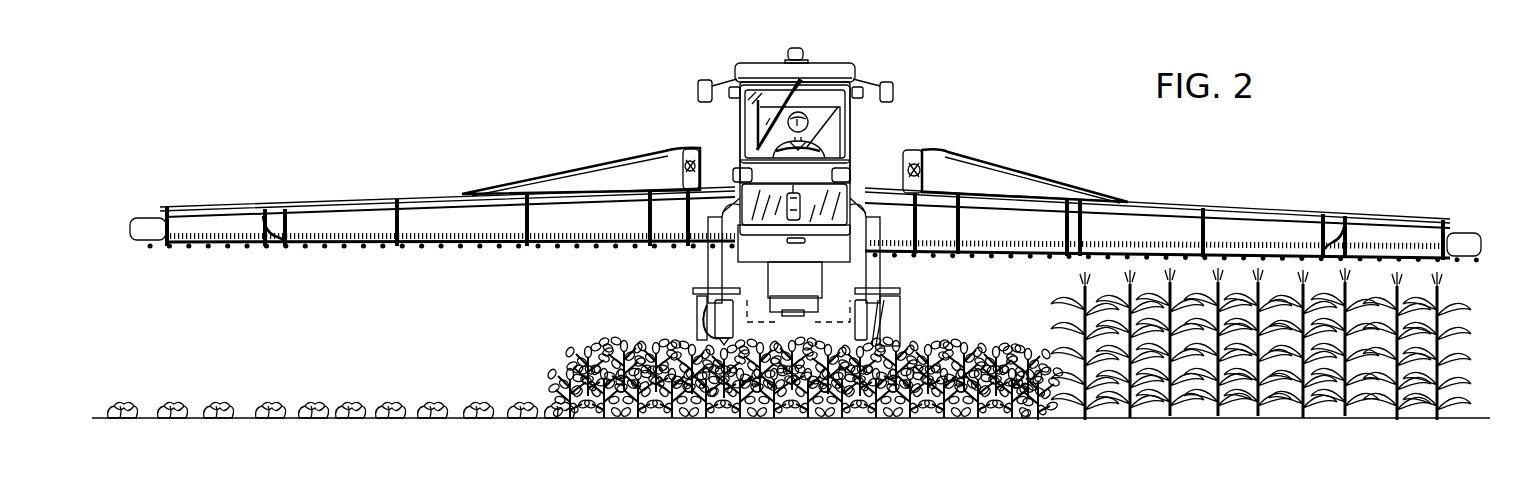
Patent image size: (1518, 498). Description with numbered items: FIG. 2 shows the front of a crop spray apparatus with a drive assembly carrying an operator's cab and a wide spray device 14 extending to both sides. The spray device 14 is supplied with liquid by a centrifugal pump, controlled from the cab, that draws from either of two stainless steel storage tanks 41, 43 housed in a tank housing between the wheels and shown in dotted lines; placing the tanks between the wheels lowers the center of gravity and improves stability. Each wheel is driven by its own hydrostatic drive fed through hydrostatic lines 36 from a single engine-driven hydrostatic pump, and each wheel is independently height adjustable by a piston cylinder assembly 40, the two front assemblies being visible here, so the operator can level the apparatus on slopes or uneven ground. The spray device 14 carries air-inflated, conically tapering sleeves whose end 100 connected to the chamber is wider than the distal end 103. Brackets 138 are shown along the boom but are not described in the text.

The spray device 14 is at (804, 197).
The hydrostatic lines 36 is at (690, 325).
The piston cylinder assembly 40 is at (700, 307).
The storage tank 41 is at (710, 278).
The storage tank 43 is at (880, 273).
The end of sleeve 100 is at (675, 247).
The distal end of sleeve 103 is at (132, 228).
The boom clamp bracket 138 is at (265, 243).